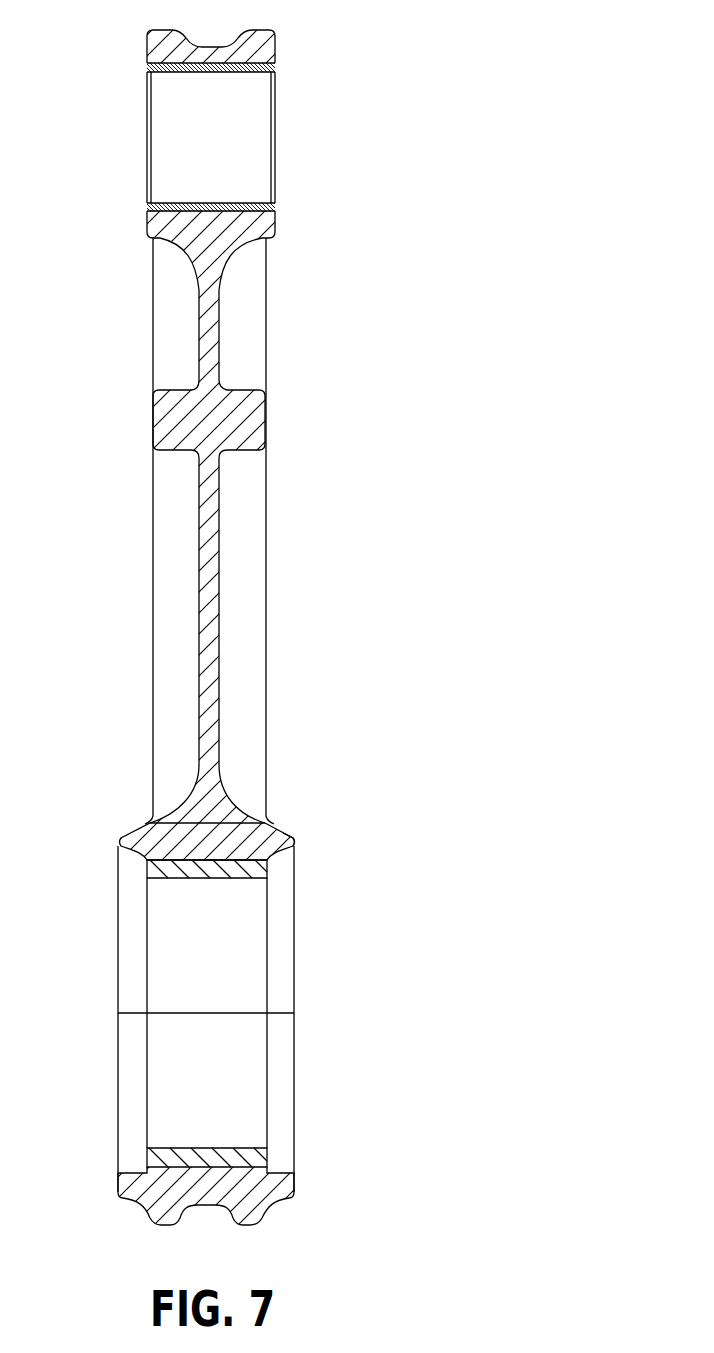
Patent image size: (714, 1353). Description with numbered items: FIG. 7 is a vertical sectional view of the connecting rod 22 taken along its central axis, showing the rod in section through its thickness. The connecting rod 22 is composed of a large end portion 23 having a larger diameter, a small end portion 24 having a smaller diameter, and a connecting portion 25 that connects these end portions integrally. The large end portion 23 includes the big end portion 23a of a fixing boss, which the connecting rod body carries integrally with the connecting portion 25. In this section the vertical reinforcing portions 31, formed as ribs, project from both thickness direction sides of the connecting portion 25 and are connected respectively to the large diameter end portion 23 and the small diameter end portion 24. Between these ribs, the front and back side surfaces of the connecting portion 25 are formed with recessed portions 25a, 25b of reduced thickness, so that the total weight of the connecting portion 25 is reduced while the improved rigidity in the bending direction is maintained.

The connecting rod 22 is at (253, 626).
The large end portion 23 is at (252, 807).
The big end portion of fixing boss 23a is at (296, 836).
The small end portion 24 is at (287, 48).
The connecting portion 25 is at (210, 627).
The recessed portion 25a is at (175, 639).
The recessed portion 25b is at (175, 325).
The vertical reinforcing portion 31 is at (152, 468).